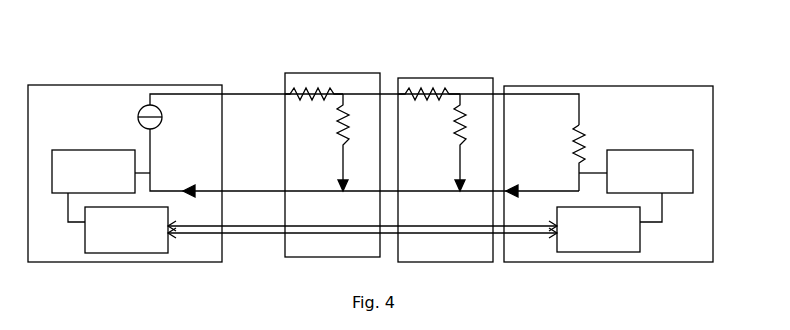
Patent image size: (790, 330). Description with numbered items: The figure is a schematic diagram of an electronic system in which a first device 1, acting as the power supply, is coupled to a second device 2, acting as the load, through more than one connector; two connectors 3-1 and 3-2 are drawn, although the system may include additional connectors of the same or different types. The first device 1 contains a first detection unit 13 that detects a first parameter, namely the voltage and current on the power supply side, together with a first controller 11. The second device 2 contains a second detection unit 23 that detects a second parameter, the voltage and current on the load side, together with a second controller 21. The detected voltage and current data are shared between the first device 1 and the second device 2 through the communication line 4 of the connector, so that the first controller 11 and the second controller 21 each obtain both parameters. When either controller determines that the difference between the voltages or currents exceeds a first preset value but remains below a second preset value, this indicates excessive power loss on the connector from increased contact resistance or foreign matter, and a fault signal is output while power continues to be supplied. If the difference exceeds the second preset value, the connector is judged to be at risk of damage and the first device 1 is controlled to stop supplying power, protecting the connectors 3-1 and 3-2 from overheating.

The first device 1 is at (99, 85).
The second device 2 is at (551, 86).
The first connector 3-1 is at (303, 73).
The second connector 3-2 is at (415, 78).
The communication line 4 is at (415, 235).
The first controller 11 is at (130, 230).
The first detection unit 13 is at (101, 186).
The second controller 21 is at (594, 229).
The second detection unit 23 is at (636, 186).